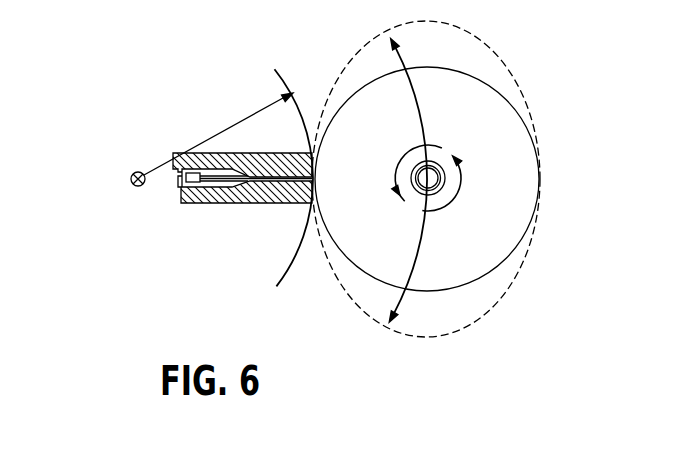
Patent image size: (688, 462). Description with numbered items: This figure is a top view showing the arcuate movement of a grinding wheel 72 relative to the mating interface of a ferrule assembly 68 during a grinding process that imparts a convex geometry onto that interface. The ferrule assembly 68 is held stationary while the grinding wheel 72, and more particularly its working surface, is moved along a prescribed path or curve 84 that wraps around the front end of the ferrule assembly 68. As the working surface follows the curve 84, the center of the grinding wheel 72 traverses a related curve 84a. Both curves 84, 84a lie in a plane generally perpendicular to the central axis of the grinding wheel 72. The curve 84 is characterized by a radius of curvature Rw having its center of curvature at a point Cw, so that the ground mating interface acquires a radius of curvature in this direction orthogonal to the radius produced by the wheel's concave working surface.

The grinding wheel 72 is at (541, 172).
The curve 84 is at (291, 266).
The related curve 84a is at (419, 107).
The ferrule assembly 68 is at (207, 205).
The center of curvature Cw is at (137, 172).
The radius of curvature Rw is at (233, 126).